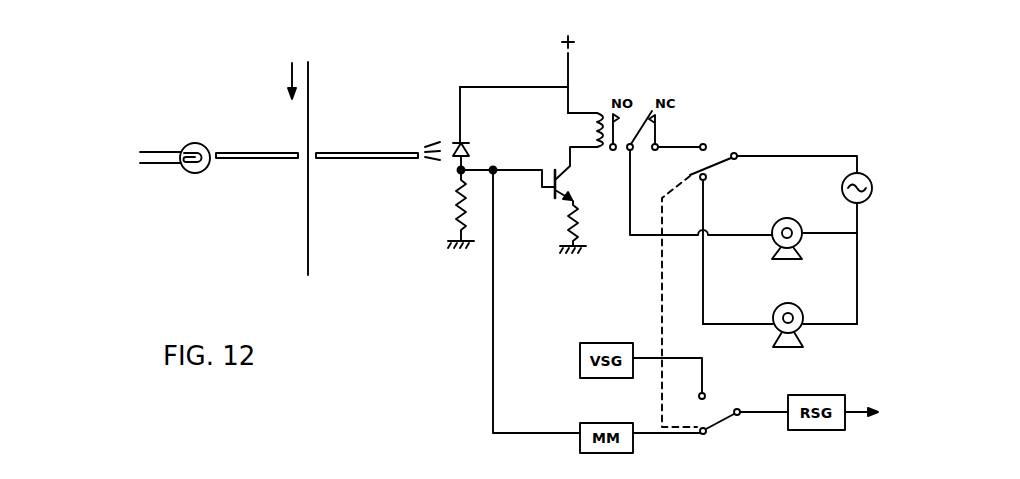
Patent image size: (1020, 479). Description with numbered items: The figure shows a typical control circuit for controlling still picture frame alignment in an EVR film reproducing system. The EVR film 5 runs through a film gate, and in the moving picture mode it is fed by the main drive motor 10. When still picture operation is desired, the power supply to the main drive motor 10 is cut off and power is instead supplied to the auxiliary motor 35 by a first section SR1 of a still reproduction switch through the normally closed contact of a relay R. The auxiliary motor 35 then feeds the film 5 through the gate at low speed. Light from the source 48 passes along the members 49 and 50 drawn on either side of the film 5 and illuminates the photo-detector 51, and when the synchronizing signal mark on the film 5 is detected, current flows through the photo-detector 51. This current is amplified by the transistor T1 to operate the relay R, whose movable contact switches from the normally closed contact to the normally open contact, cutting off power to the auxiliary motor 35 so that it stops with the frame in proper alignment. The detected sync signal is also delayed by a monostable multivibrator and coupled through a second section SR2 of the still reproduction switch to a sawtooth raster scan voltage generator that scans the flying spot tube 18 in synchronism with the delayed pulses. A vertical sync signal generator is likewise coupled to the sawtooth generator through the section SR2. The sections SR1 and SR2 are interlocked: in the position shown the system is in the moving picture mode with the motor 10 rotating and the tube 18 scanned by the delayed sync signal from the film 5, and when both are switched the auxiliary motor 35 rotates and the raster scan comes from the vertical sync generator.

The EVR film 5 is at (309, 97).
The light source 48 is at (189, 143).
The light guide plate 49 is at (272, 160).
The light guide plate 50 is at (392, 160).
The photo-detector 51 is at (468, 143).
The transistor T1 is at (549, 199).
The relay R is at (598, 112).
The first section of still reproduction switch SR1 is at (714, 170).
The auxiliary motor 35 is at (799, 219).
The main drive motor 10 is at (802, 328).
The second section of still reproduction switch SR2 is at (715, 407).
The flying spot tube 18 is at (880, 412).